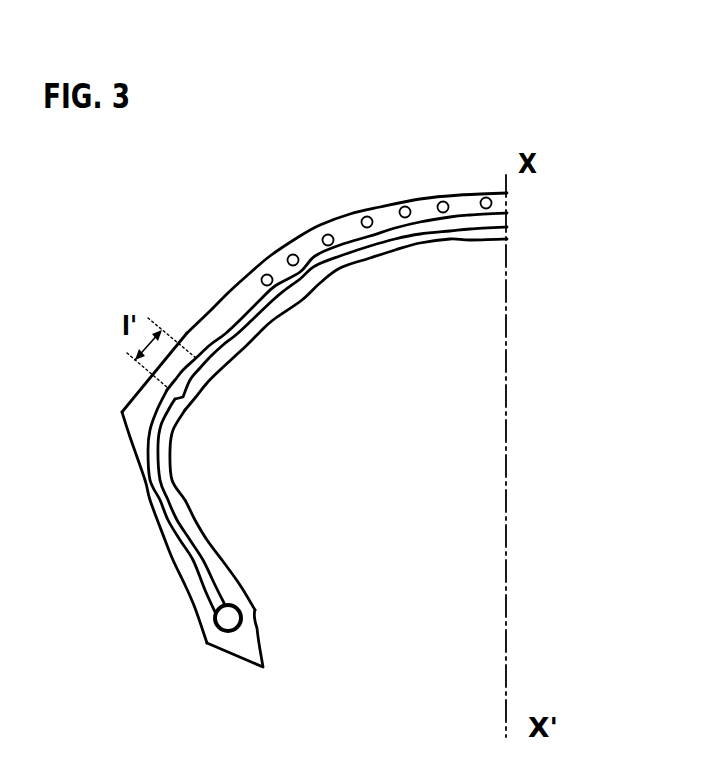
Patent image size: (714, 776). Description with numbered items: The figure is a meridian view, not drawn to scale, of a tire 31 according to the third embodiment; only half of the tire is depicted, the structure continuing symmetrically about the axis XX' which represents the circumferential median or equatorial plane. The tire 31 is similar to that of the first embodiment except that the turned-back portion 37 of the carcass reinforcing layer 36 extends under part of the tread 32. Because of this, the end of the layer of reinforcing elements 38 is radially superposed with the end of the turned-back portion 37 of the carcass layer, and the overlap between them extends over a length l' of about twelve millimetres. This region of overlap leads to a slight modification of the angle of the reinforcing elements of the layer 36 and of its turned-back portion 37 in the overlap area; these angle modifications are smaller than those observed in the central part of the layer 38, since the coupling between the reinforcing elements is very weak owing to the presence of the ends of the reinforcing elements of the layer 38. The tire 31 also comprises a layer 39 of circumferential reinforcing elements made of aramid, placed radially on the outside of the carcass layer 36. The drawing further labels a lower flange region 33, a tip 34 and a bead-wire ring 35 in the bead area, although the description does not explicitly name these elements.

The tire 31 is at (427, 123).
The tread 32 is at (374, 206).
The lower flange portion 33 is at (180, 509).
The tip 34 is at (258, 617).
The hook ring 35 is at (230, 618).
The carcass reinforcing layer 36 is at (207, 551).
The turned-back portion 37 is at (180, 537).
The layer of reinforcing elements 38 is at (347, 258).
The layer of circumferential reinforcing elements 39 is at (287, 260).